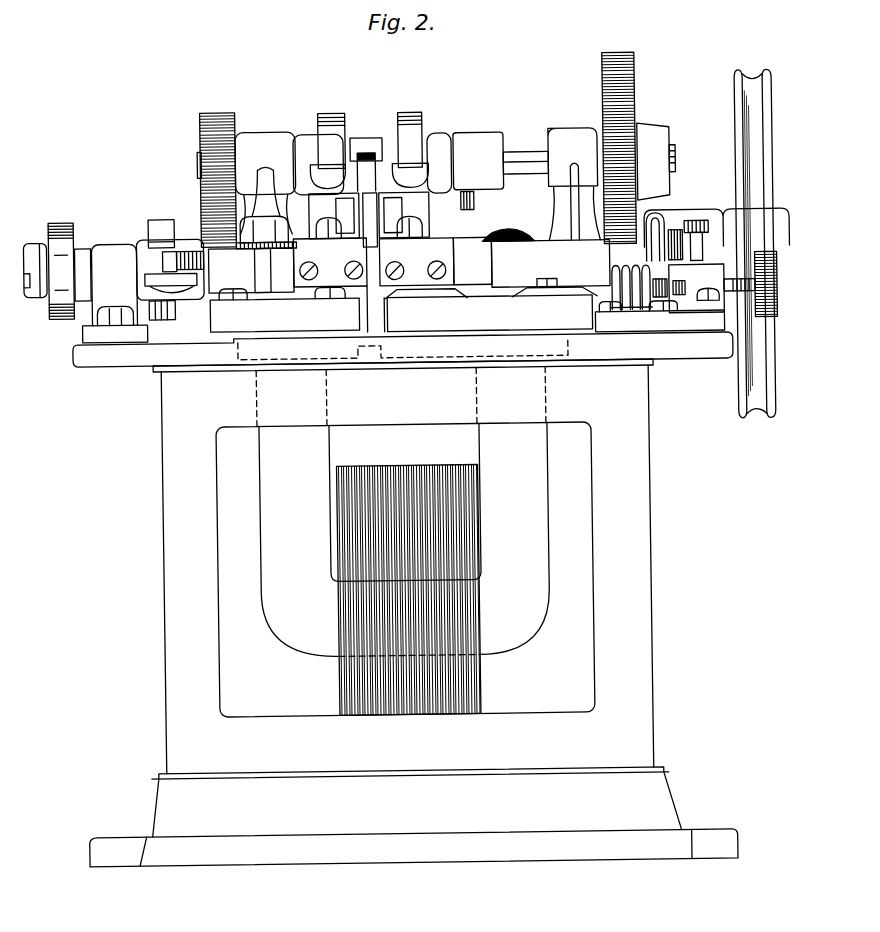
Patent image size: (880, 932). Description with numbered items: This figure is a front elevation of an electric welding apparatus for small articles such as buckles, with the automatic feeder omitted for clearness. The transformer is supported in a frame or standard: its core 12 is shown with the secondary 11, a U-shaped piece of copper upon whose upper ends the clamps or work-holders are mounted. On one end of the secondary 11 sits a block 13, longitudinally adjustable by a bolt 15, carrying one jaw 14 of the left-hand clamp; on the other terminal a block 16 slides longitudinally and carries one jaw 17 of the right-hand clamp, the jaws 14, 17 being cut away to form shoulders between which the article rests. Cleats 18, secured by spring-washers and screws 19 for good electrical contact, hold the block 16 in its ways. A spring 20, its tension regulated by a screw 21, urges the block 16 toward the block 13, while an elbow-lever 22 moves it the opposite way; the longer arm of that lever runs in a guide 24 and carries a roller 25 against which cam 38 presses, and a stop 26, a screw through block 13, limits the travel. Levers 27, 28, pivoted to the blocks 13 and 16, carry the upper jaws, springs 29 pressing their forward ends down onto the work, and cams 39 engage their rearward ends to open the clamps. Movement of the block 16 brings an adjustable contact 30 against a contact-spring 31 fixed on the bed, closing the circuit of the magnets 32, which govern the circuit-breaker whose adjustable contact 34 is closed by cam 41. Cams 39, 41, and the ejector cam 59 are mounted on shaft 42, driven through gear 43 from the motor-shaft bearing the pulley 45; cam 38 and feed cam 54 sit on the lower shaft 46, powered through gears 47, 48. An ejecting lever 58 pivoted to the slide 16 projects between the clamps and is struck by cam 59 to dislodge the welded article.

The secondary 11 is at (268, 548).
The core 12 is at (337, 678).
The block 13 is at (285, 297).
The jaw 14 is at (318, 248).
The bolt 15 is at (265, 230).
The block 16 is at (504, 288).
The jaw 17 is at (441, 243).
The cleats 18 is at (557, 290).
The spring-washers and screws 19 is at (568, 270).
The spring 20 is at (616, 280).
The screw 21 is at (781, 285).
The elbow-lever 22 is at (199, 272).
The guide 24 is at (102, 250).
The roller 25 is at (160, 246).
The stop 26 is at (167, 260).
The lever 27 is at (358, 208).
The lever 28 is at (395, 222).
The springs 29 is at (330, 170).
The adjustable contact 30 is at (723, 254).
The contact-spring 31 is at (670, 224).
The magnets 32 is at (527, 240).
The adjustable contact 34 is at (482, 203).
The cam 38 is at (160, 217).
The cams 39 is at (405, 116).
The cam 41 is at (472, 130).
The shaft 42 is at (203, 161).
The gear 43 is at (621, 56).
The motor wheel or pulley 45 is at (740, 86).
The shaft 46 is at (32, 238).
The gear 47 is at (204, 131).
The gear 48 is at (206, 228).
The cam 54 is at (68, 214).
The lever 58 is at (377, 238).
The cam 59 is at (368, 172).